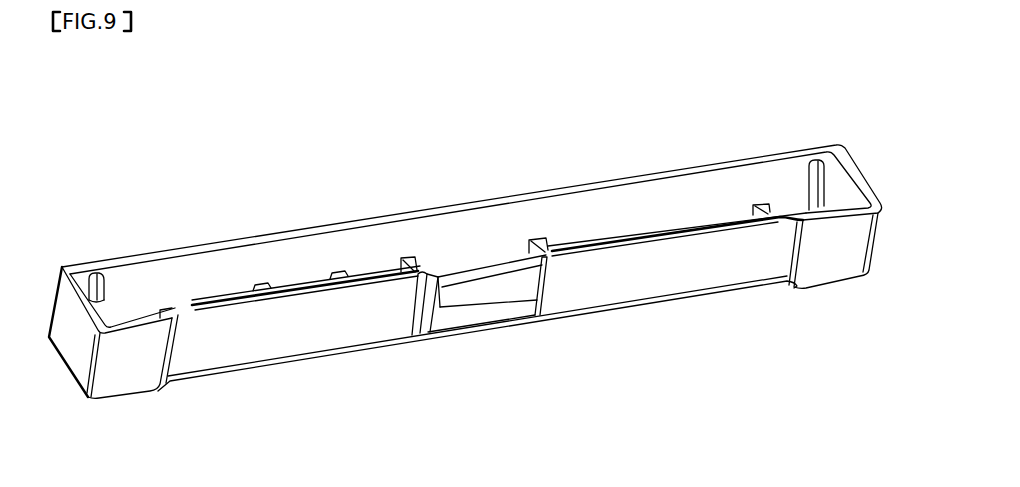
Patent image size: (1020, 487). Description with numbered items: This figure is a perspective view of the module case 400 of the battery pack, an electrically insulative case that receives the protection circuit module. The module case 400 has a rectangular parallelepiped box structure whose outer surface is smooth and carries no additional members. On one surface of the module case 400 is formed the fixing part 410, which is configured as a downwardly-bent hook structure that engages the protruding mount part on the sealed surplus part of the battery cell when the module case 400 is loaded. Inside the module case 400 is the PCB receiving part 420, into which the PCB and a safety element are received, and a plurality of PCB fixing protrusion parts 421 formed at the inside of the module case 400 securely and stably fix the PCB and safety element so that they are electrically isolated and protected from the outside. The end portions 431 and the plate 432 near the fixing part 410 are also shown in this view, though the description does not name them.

The module case 400 is at (187, 146).
The fixing part 410 is at (510, 285).
The PCB receiving part 420 is at (623, 215).
The PCB fixing protrusion parts 421 is at (112, 289).
The end portion 431 is at (137, 370).
The support plate 432 is at (463, 312).